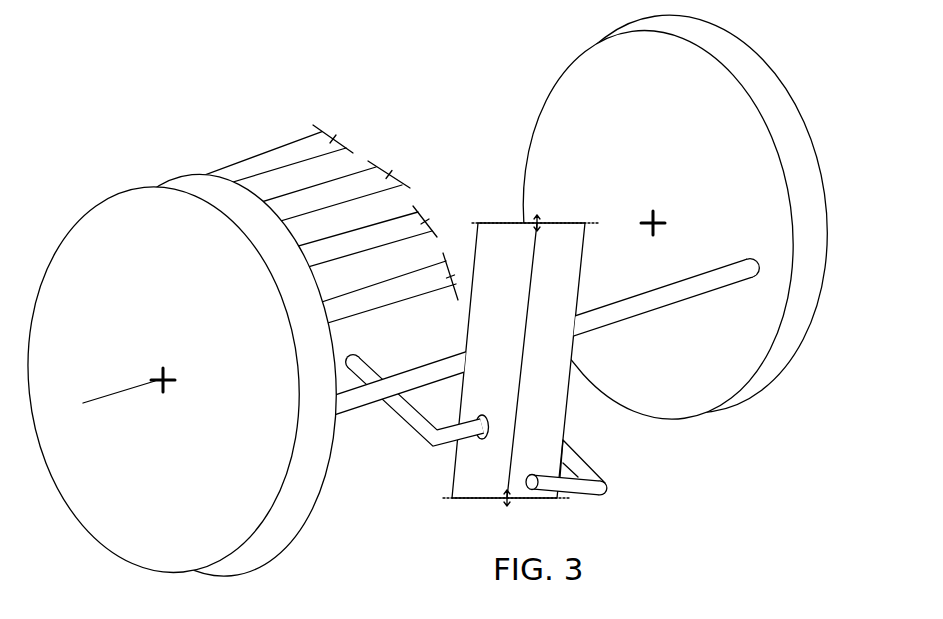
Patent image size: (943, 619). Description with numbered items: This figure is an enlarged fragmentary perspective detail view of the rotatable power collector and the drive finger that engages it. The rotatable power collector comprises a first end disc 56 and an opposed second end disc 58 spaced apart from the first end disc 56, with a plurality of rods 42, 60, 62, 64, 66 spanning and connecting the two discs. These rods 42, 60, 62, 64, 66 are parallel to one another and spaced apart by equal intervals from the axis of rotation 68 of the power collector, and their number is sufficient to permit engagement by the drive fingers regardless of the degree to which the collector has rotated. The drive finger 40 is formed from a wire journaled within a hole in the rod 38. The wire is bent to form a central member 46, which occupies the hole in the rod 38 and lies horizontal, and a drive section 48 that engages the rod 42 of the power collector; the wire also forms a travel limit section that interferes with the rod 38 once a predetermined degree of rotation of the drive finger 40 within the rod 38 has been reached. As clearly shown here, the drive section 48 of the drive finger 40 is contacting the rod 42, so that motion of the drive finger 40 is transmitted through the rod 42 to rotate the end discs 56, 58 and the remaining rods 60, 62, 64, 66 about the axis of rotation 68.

The rod 38 is at (518, 290).
The drive finger 40 is at (673, 452).
The rod 42 is at (422, 371).
The central member 46 is at (463, 432).
The drive section 48 is at (405, 409).
The first end disc 56 is at (194, 514).
The second end disc 58 is at (784, 48).
The rod 60 is at (252, 157).
The rod 62 is at (353, 172).
The rod 64 is at (393, 215).
The rod 66 is at (343, 293).
The axis of rotation 68 is at (119, 387).